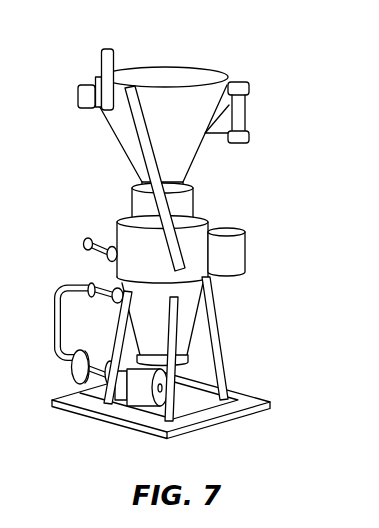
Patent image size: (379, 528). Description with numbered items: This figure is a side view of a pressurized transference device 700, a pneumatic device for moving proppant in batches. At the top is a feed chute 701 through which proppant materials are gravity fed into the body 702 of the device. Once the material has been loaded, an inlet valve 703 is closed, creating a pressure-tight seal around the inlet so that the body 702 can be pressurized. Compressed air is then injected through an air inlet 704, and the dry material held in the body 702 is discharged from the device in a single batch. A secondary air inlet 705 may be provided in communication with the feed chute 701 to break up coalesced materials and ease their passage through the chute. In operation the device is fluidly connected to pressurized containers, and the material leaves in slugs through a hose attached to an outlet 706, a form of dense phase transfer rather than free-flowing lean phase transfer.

The pressurized transference device 700 is at (187, 245).
The feed chute 701 is at (189, 170).
The body 702 is at (173, 371).
The inlet valve 703 is at (185, 213).
The air inlet 704 is at (90, 242).
The secondary air inlet 705 is at (127, 143).
The outlet 706 is at (173, 405).